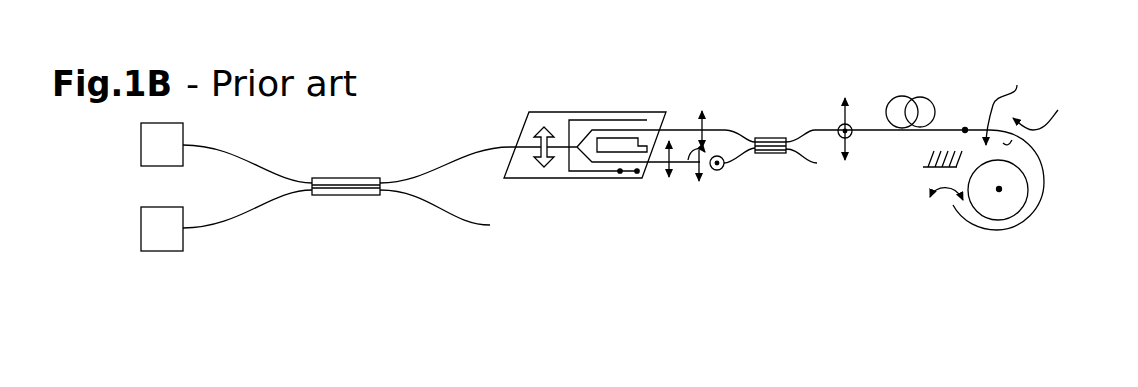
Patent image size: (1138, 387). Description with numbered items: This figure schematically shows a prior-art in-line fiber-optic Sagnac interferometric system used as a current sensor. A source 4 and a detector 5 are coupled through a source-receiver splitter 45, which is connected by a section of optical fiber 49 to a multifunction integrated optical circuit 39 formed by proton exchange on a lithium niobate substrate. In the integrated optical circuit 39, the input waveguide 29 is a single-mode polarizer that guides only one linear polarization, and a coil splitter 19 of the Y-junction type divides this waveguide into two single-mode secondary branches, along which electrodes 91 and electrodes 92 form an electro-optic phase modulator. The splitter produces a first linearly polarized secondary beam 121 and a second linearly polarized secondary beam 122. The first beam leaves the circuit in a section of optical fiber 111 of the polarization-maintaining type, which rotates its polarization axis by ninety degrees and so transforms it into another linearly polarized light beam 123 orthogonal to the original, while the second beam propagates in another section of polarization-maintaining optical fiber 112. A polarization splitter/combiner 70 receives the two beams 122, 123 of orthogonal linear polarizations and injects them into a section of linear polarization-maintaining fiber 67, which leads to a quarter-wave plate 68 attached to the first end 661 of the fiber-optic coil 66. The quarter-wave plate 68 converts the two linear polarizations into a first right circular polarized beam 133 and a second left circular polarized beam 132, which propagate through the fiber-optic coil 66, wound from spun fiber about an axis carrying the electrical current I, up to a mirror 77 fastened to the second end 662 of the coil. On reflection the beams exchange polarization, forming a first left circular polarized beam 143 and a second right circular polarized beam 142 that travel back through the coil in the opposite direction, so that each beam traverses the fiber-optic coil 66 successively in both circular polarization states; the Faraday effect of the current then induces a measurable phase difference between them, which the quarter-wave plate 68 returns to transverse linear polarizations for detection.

The source 4 is at (140, 143).
The detector 5 is at (140, 233).
The source-receiver splitter 45 is at (348, 196).
The section of optical fiber 49 is at (440, 163).
The integrated optical circuit 39 is at (657, 112).
The input waveguide 29 is at (532, 137).
The coil splitter 19 is at (578, 145).
The electrodes 92 is at (620, 173).
The electrodes 91 is at (637, 174).
The first linearly polarized secondary beam 121 is at (669, 179).
The second linearly polarized secondary beam 122 is at (703, 108).
The linearly polarized light beam 123 is at (717, 171).
The section of polarization-maintaining optical fiber 112 is at (718, 130).
The section of optical fiber 111 is at (743, 154).
The polarization splitter/combiner 70 is at (768, 154).
The section of linear polarization-maintaining fiber 67 is at (900, 96).
The quarter-wave plate 68 is at (963, 128).
The first end 661 is at (968, 127).
The second left circular polarized beam 132 is at (1012, 102).
The first right circular polarized beam 133 is at (1056, 120).
The fiber-optic coil 66 is at (1030, 178).
The second right circular polarized beam 142 is at (955, 212).
The mirror 77 is at (923, 155).
The second end 662 is at (933, 170).
The first left circular polarized beam 143 is at (929, 201).